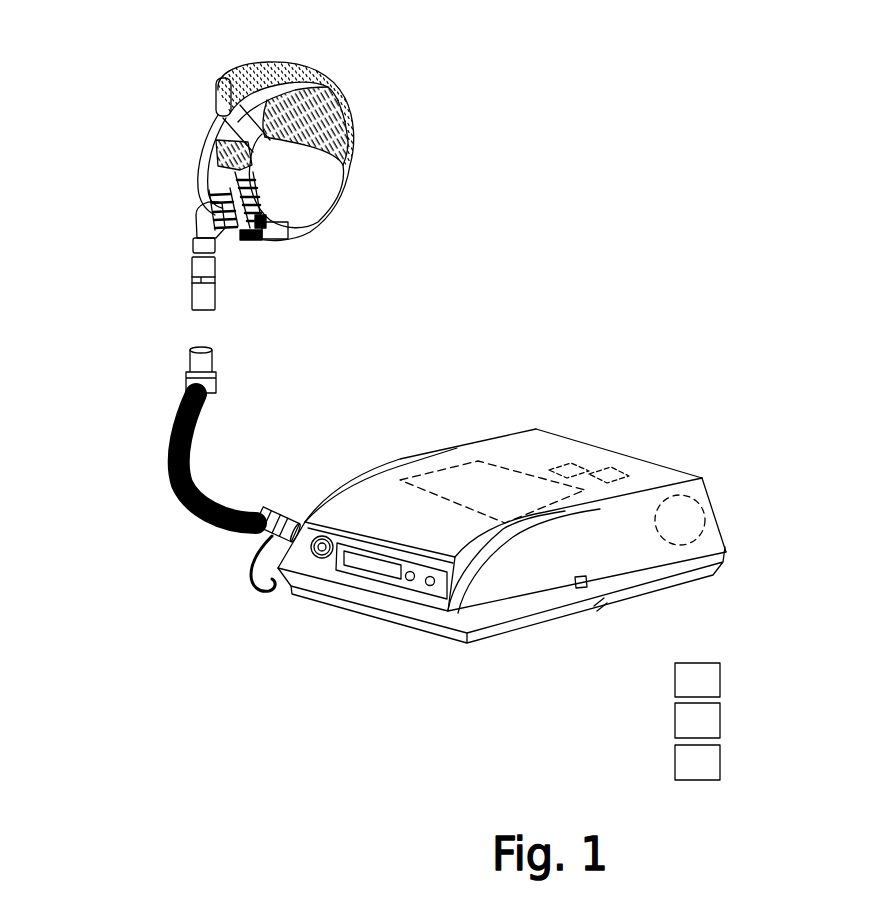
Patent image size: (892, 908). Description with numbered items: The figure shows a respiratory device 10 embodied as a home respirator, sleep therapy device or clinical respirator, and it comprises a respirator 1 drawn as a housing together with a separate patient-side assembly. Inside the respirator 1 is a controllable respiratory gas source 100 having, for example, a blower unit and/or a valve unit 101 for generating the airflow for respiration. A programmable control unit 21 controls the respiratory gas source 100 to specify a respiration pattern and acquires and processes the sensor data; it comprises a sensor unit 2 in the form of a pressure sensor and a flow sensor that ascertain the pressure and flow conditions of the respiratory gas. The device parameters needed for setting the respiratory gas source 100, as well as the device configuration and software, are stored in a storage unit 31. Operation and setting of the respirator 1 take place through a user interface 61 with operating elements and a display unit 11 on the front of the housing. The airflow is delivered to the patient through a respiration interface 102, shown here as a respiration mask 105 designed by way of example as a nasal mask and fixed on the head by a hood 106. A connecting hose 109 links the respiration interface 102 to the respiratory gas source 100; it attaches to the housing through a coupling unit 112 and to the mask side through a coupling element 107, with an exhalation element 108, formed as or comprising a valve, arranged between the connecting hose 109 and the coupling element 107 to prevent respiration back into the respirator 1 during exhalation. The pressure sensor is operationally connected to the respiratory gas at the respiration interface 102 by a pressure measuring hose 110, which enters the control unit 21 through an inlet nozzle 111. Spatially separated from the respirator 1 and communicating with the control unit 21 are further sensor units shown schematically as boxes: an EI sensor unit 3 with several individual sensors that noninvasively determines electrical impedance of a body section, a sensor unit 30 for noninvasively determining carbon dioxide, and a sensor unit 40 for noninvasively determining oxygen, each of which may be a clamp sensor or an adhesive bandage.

The respirator 1 is at (677, 190).
The respiratory device 10 is at (697, 97).
The sensor unit 2 is at (460, 464).
The EI sensor unit 3 is at (585, 590).
The display unit 11 is at (363, 564).
The control unit 21 is at (570, 462).
The CO2 sensor unit 30 is at (589, 596).
The storage unit 31 is at (619, 476).
The O2 sensor unit 40 is at (593, 603).
The user interface 61 is at (417, 584).
The respiratory gas source 100 is at (530, 455).
The valve unit 101 is at (693, 513).
The respiration interface 102 is at (366, 160).
The respiration mask 105 is at (204, 198).
The hood 106 is at (220, 98).
The coupling element 107 is at (200, 227).
The exhalation element 108 is at (232, 276).
The connecting hose 109 is at (182, 418).
The pressure measuring hose 110 is at (251, 568).
The inlet nozzle 111 is at (301, 548).
The coupling unit 112 is at (305, 522).